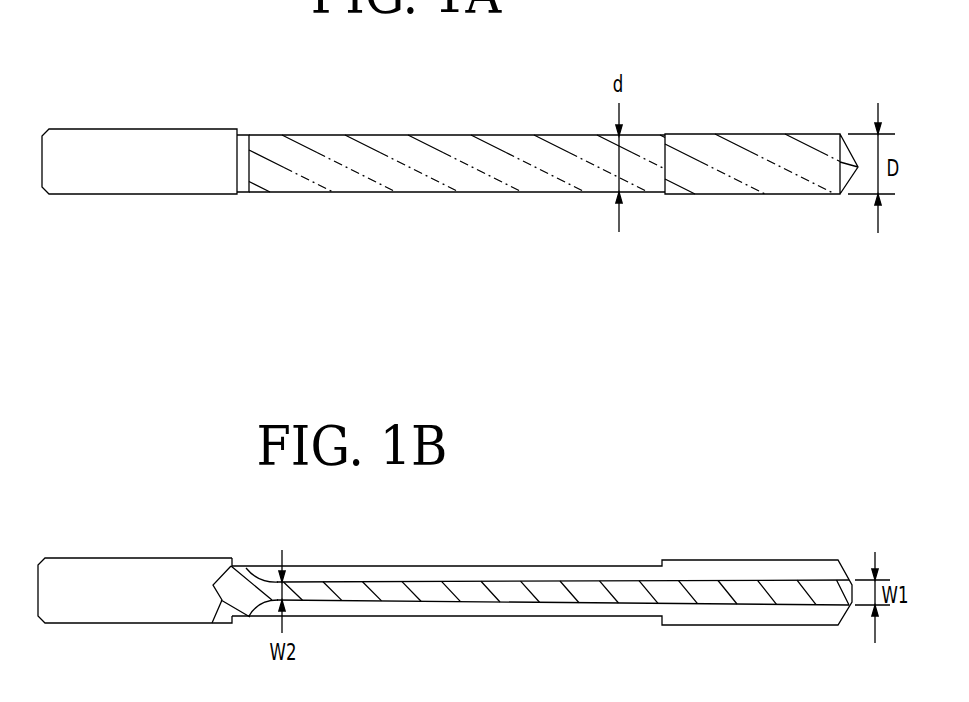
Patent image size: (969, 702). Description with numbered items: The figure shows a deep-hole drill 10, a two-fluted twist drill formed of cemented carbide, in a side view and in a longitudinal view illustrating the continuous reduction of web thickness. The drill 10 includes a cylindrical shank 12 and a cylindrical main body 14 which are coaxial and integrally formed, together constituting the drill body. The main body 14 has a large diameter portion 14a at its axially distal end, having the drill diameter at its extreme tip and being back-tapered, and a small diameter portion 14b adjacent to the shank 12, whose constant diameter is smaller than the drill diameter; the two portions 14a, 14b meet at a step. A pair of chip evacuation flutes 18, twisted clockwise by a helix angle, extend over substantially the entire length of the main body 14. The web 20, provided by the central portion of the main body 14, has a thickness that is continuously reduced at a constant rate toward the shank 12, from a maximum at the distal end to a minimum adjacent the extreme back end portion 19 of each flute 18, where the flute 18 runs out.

In FIG. 1A, the deep-hole drill 10 is at (238, 68).
In FIG. 1B, the deep-hole drill 10 is at (196, 505).
In FIG. 1A, the cylindrical shank 12 is at (168, 177).
In FIG. 1B, the cylindrical shank 12 is at (125, 598).
In FIG. 1A, the cylindrical main body 14 is at (733, 40).
In FIG. 1B, the cylindrical main body 14 is at (780, 522).
In FIG. 1A, the large diameter portion 14a is at (773, 143).
In FIG. 1A, the small diameter portion 14b is at (418, 182).
In FIG. 1A, the chip evacuation flute 18 is at (557, 177).
In FIG. 1B, the chip evacuation flute 18 is at (507, 583).
In FIG. 1B, the extreme back end portion 19 is at (253, 576).
In FIG. 1B, the web 20 is at (562, 597).